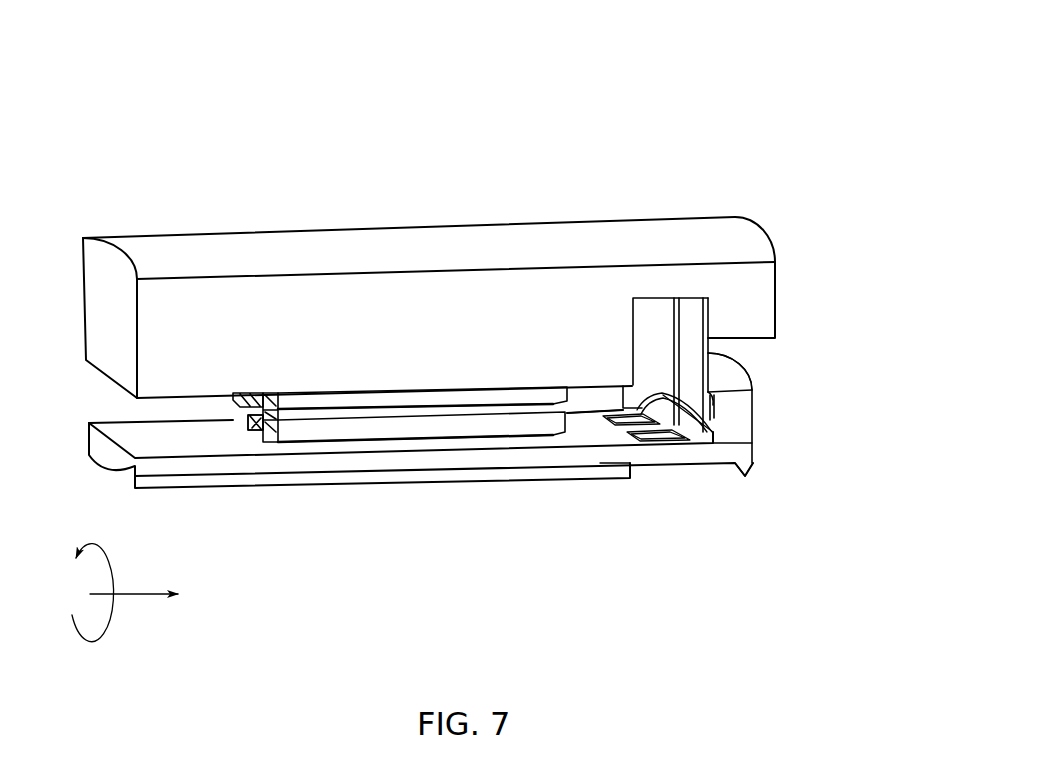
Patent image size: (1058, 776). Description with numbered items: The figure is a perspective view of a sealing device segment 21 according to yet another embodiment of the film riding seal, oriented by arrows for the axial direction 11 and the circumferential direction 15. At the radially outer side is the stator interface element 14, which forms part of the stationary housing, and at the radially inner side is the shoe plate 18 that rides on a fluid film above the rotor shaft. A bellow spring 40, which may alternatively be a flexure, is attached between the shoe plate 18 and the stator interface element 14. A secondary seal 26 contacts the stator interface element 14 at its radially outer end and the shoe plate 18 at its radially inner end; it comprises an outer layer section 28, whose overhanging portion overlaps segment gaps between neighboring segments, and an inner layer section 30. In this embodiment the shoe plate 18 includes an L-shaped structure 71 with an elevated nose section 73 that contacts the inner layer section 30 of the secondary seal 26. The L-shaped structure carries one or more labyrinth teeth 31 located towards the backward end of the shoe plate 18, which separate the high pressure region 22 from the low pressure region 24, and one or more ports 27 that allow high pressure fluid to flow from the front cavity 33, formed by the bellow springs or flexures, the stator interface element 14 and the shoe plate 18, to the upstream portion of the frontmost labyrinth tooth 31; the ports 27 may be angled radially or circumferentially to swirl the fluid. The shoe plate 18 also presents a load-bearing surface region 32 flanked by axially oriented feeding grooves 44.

The sealing device segment 21 is at (690, 73).
The stator interface element 14 is at (197, 237).
The shoe plate 18 is at (133, 468).
The high pressure region 22 is at (97, 402).
The low pressure region 24 is at (768, 363).
The secondary seal 26 is at (657, 339).
The ports 27 is at (662, 437).
The outer layer section 28 is at (662, 308).
The inner layer section 30 is at (710, 430).
The labyrinth teeth 31 is at (747, 471).
The load-bearing surface region 32 is at (240, 412).
The front cavity 33 is at (585, 405).
The bellow spring 40 is at (263, 424).
The feeding grooves 44 is at (613, 470).
The L-shaped structure 71 is at (722, 448).
The elevated nose section 73 is at (712, 406).
The axial direction 11 is at (153, 597).
The circumferential direction 15 is at (97, 643).